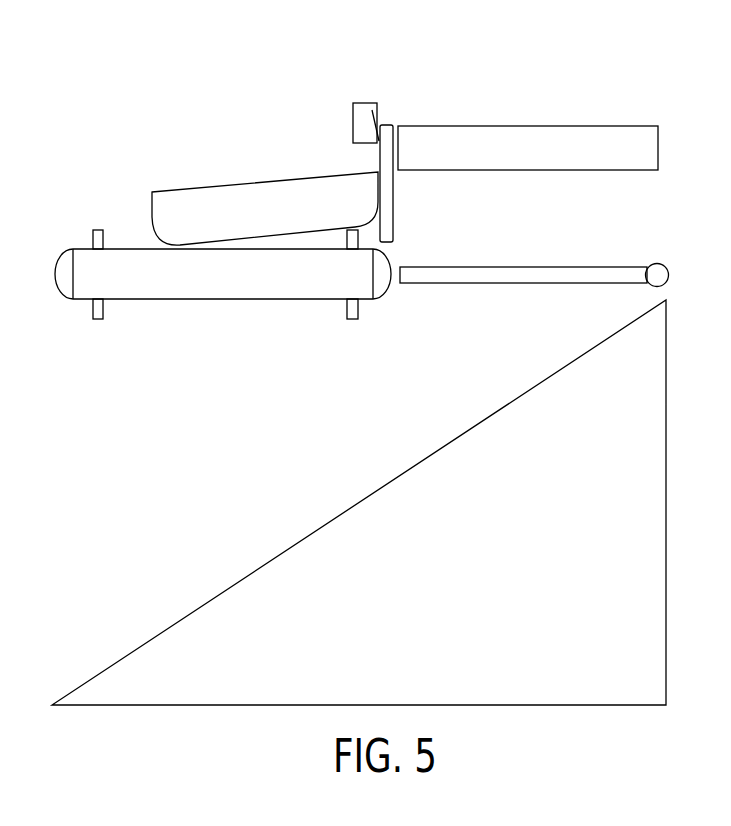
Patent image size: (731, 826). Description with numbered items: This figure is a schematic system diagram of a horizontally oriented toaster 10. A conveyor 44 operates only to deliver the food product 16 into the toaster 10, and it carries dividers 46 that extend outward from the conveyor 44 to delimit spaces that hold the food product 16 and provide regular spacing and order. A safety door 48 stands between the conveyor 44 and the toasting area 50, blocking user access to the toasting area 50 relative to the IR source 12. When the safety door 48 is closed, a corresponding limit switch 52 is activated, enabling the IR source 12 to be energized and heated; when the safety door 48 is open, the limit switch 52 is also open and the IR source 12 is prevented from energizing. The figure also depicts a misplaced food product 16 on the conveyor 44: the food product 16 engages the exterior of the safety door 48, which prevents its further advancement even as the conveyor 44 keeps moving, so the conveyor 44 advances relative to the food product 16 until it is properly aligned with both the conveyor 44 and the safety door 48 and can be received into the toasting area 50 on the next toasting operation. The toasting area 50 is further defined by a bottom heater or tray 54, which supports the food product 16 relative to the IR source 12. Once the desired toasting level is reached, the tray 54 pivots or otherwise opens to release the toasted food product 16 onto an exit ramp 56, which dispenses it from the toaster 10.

The toaster 10 is at (527, 71).
The IR source 12 is at (590, 126).
The food product 16 is at (253, 203).
The conveyor 44 is at (210, 300).
The dividers 46 is at (103, 307).
The safety door 48 is at (385, 124).
The toasting area 50 is at (587, 227).
The limit switch 52 is at (375, 111).
The bottom heater or tray 54 is at (523, 283).
The exit ramp 56 is at (447, 462).